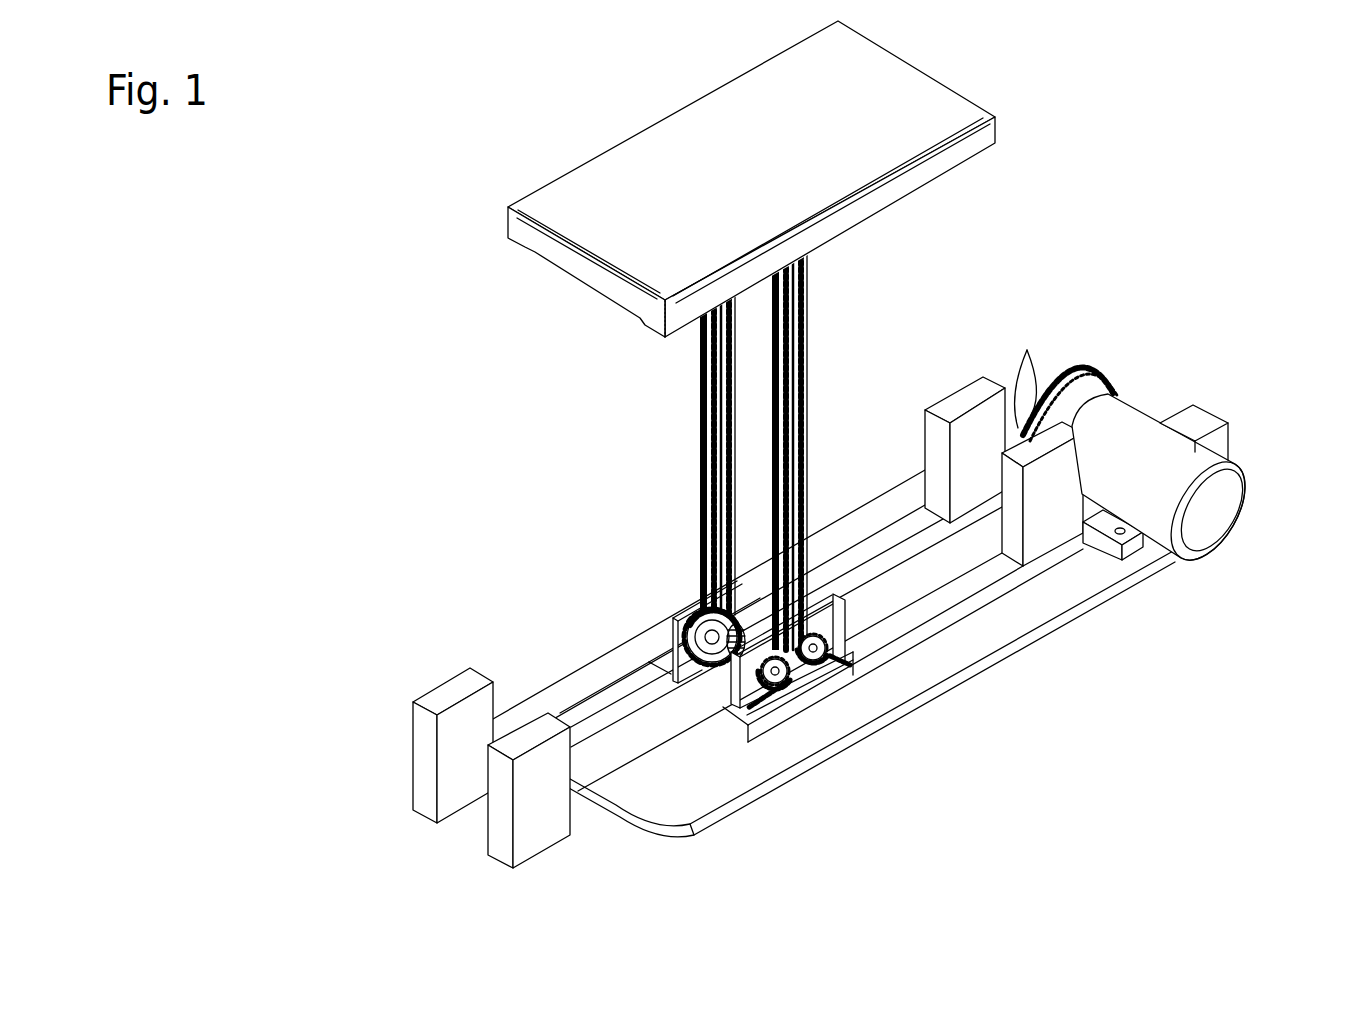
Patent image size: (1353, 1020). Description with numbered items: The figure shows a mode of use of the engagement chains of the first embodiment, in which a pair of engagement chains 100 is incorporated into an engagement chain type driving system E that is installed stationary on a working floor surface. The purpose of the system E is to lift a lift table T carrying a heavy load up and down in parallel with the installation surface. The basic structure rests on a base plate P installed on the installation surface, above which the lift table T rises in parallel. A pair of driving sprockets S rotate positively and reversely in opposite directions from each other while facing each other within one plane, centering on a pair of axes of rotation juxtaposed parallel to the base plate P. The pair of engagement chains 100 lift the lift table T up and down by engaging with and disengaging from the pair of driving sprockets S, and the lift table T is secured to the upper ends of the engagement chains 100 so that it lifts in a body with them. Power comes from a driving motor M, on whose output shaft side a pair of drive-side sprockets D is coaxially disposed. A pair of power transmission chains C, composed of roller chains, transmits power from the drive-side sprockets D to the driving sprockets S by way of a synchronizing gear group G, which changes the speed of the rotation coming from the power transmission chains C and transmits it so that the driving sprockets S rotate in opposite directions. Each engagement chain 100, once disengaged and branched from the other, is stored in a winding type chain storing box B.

The engagement chain type driving system E is at (458, 152).
The lift table T is at (701, 183).
The engagement chain 100 is at (700, 405).
The synchronizing gear group G is at (693, 623).
The driving sprocket S is at (820, 662).
The winding type chain storing box B is at (445, 695).
The base plate P is at (892, 680).
The driving motor M is at (1217, 527).
The power transmission chain C is at (1027, 372).
The drive-side sprocket D is at (1082, 372).